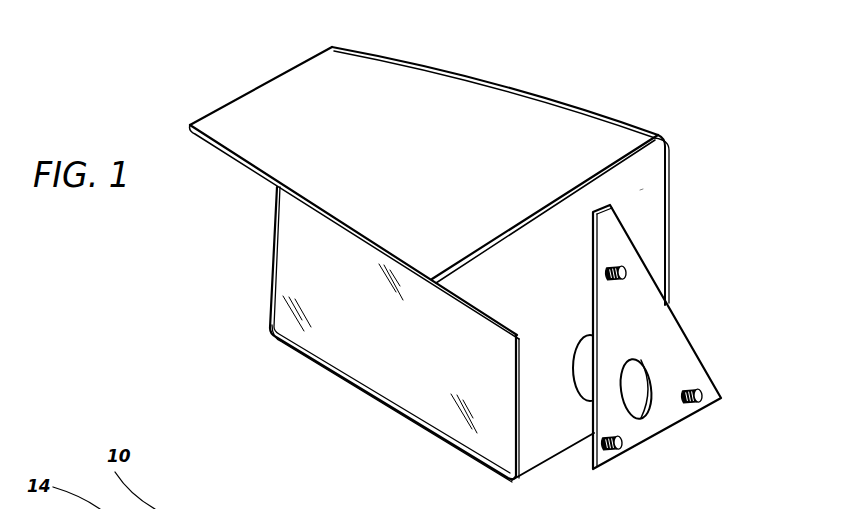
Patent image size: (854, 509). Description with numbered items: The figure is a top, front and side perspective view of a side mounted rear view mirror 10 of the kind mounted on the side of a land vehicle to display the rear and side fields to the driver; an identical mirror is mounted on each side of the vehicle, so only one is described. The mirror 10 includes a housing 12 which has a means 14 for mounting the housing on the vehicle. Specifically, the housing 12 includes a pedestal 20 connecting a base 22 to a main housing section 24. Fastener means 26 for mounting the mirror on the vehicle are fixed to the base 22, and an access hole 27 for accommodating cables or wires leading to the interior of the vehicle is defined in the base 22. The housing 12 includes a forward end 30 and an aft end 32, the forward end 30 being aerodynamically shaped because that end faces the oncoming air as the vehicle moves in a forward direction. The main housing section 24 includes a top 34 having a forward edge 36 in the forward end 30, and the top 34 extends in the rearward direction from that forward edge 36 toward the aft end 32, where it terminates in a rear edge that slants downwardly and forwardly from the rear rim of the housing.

The rear view mirror 10 is at (477, 55).
The housing 12 is at (248, 92).
The means for mounting 14 is at (694, 344).
The pedestal 20 is at (585, 380).
The base 22 is at (692, 372).
The main housing section 24 is at (643, 189).
The fastener means 26 is at (630, 275).
The access hole 27 is at (642, 417).
The forward end 30 is at (608, 92).
The aft end 32 is at (228, 270).
The top 34 is at (565, 150).
The forward edge 36 is at (538, 95).